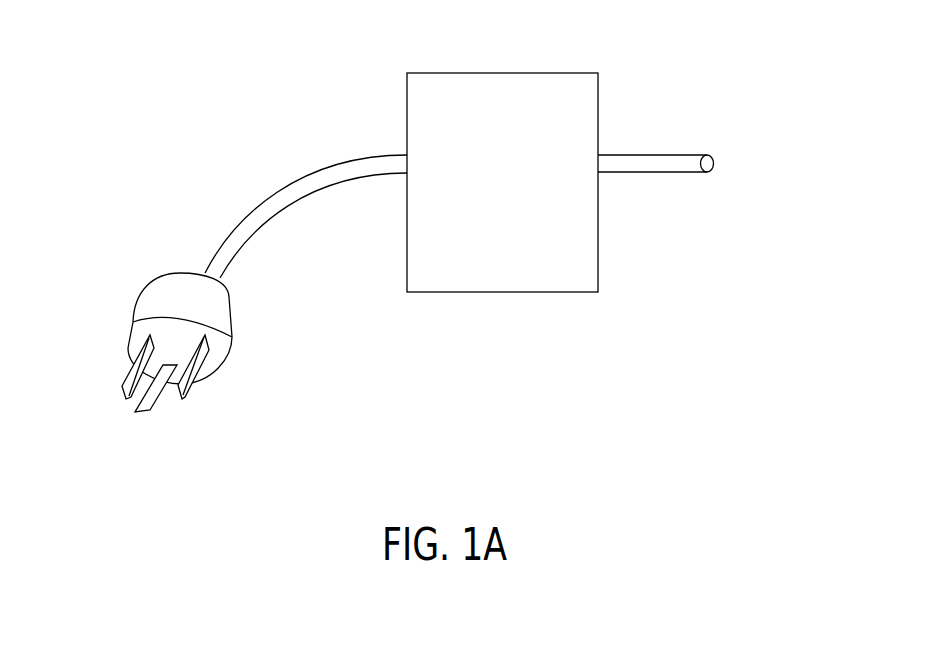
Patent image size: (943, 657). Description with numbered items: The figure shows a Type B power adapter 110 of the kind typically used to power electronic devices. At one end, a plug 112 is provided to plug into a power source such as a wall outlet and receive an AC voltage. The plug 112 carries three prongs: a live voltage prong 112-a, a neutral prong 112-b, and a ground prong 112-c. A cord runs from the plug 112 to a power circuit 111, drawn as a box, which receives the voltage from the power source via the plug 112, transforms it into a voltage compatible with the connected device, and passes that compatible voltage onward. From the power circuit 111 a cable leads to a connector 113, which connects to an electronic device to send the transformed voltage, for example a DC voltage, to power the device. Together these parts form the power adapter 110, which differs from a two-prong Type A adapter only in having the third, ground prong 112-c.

The power adapter 110 is at (153, 133).
The power circuit 111 is at (500, 72).
The plug 112 is at (230, 305).
The live voltage prong 112-a is at (126, 391).
The neutral prong 112-b is at (207, 373).
The ground prong 112-c is at (153, 409).
The connector 113 is at (714, 162).